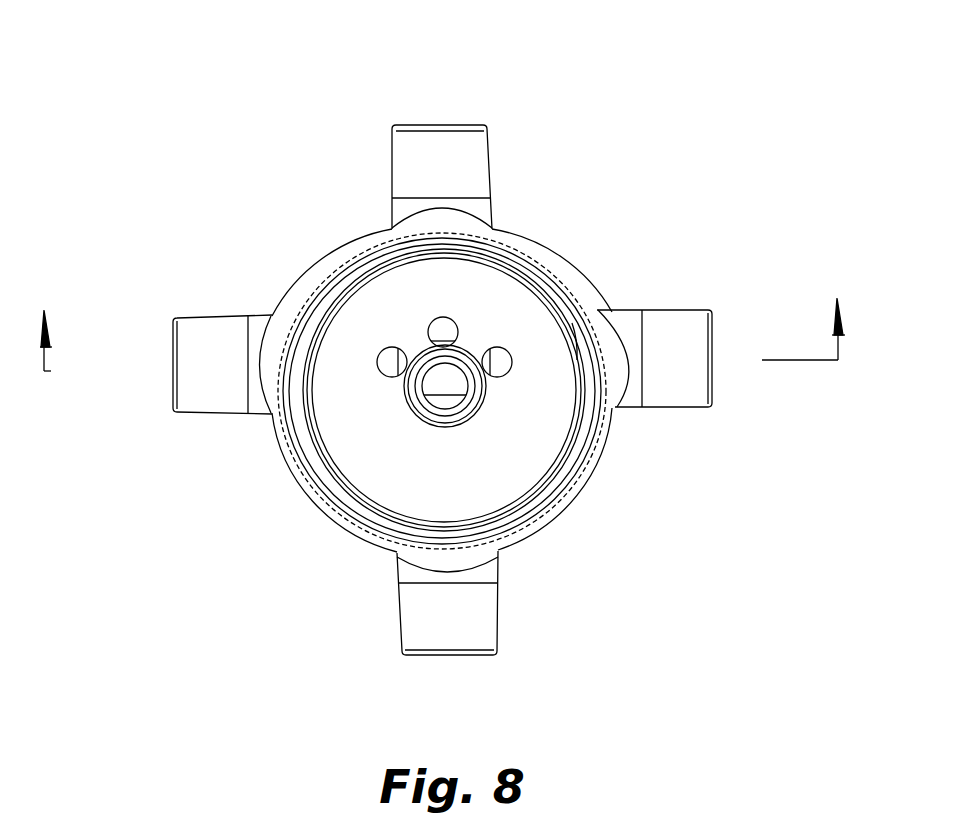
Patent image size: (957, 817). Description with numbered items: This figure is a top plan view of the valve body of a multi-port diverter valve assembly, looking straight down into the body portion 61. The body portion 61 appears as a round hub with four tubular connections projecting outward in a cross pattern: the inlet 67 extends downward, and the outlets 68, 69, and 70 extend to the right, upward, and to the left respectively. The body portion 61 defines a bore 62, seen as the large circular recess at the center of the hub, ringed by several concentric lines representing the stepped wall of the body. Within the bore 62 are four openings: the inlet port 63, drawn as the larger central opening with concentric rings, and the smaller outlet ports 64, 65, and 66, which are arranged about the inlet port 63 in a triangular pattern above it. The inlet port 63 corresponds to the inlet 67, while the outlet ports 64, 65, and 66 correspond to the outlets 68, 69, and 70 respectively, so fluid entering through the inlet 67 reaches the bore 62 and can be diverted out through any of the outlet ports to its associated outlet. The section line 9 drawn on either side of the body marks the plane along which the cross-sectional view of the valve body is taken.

The section line 9- 9 is at (441, 316).
The body portion 61 is at (634, 217).
The bore 62 is at (365, 443).
The inlet port 63 is at (438, 403).
The outlet port 64 is at (500, 365).
The outlet port 65 is at (452, 328).
The outlet port 66 is at (386, 364).
The inlet 67 is at (478, 675).
The outlet 68 is at (722, 388).
The outlet 69 is at (464, 105).
The outlet 70 is at (133, 395).